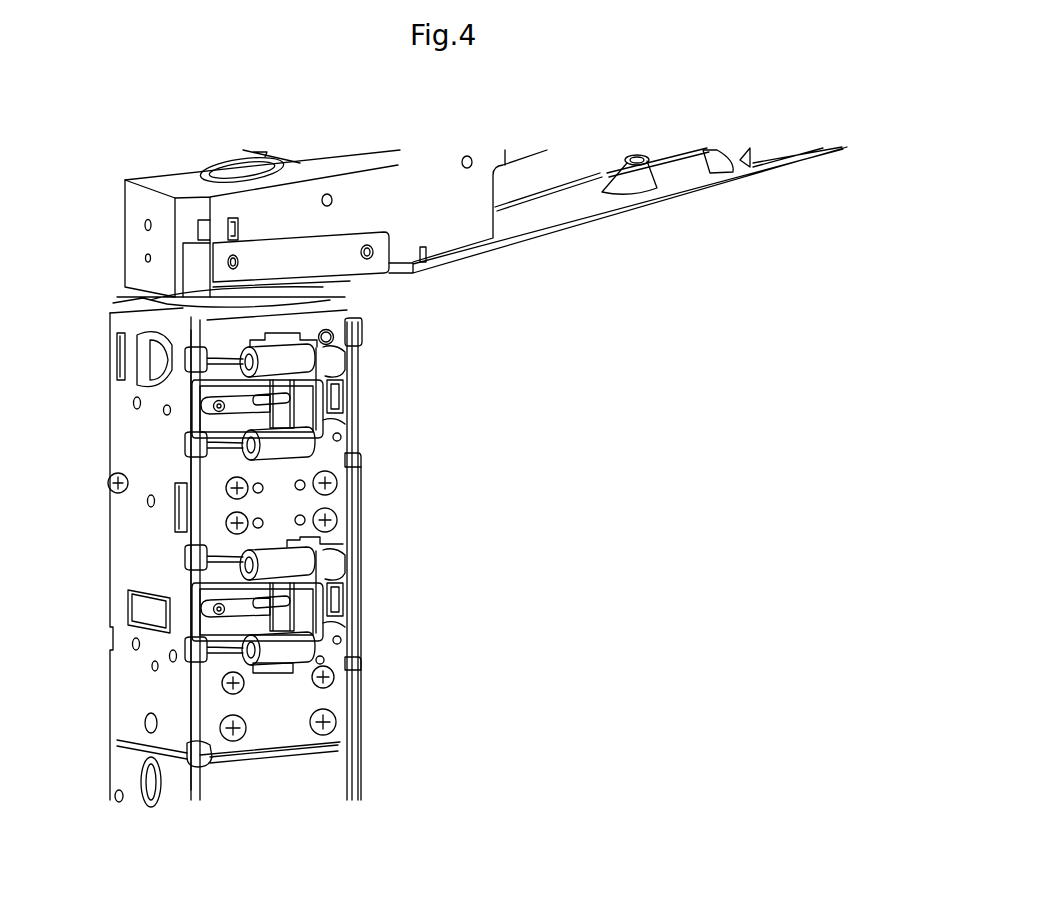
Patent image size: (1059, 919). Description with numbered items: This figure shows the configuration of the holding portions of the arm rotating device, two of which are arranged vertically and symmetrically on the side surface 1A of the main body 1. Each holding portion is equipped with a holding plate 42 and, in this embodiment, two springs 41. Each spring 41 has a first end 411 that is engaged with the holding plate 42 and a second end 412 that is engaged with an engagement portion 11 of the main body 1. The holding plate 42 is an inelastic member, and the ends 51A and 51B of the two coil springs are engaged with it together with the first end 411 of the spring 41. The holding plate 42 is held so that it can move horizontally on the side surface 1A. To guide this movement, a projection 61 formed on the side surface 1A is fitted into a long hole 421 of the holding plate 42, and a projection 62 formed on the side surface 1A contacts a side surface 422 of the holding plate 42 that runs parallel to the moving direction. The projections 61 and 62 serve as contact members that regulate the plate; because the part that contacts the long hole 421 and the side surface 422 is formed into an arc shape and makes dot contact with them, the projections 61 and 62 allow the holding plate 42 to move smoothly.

The main body 1 is at (110, 686).
The side surface 1A is at (307, 700).
The engagement portion 11 is at (179, 358).
The spring 41 is at (290, 370).
The first end 411 is at (318, 347).
The second end 412 is at (195, 380).
The holding plate 42 is at (330, 398).
The long hole 421 is at (353, 462).
The side surface 422 is at (361, 331).
The end of coil spring 51A is at (253, 412).
The end of coil spring 51B is at (253, 618).
The projection 61 is at (205, 407).
The projection 62 is at (331, 333).